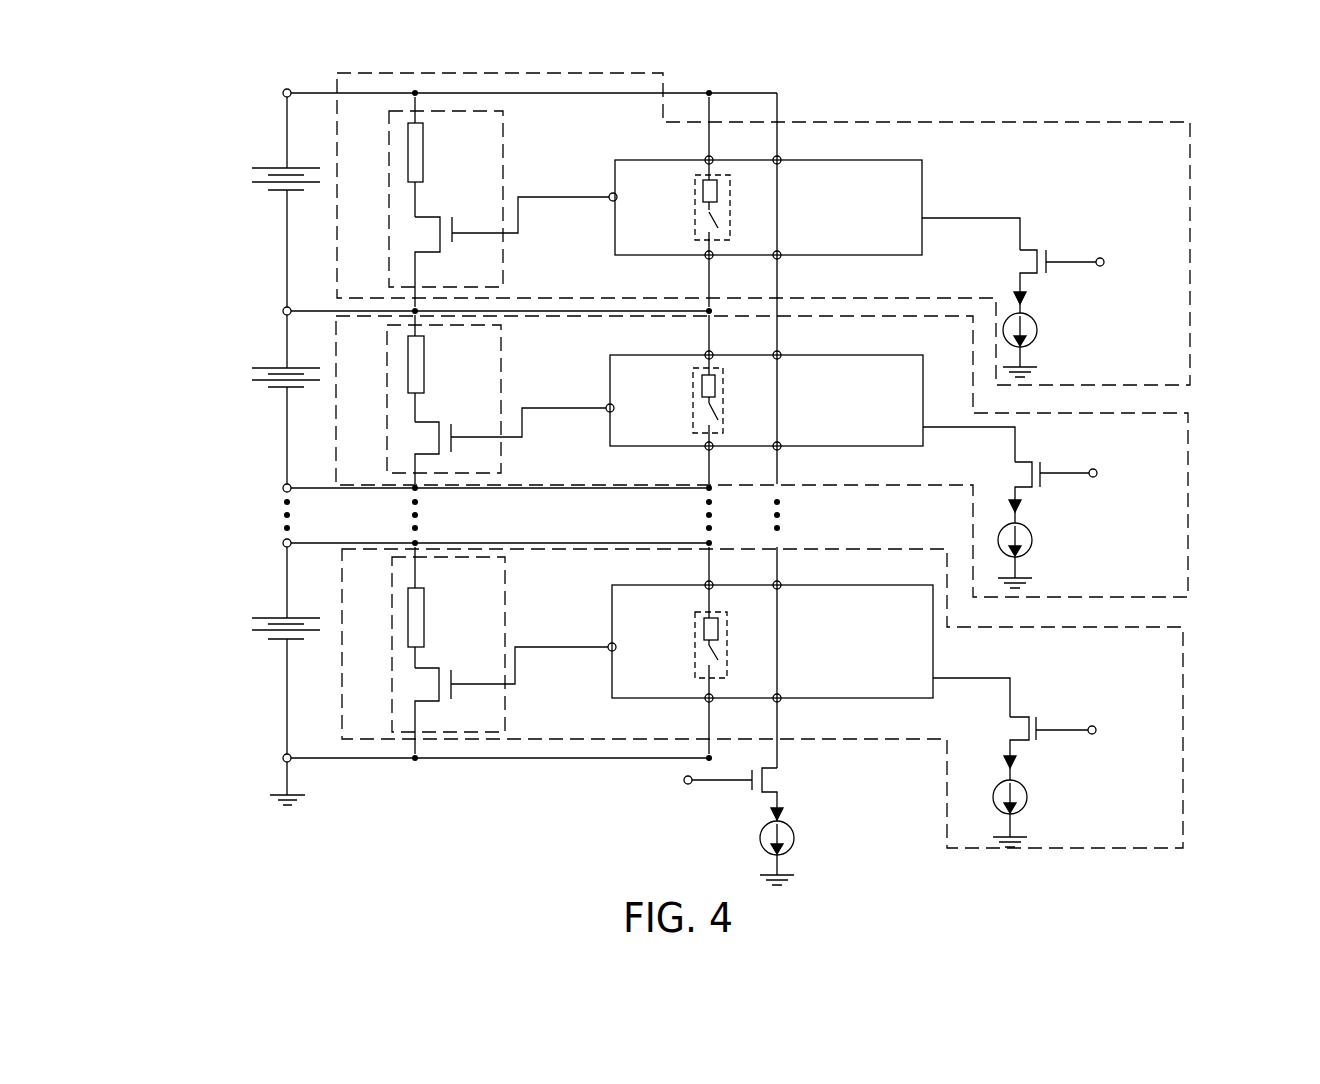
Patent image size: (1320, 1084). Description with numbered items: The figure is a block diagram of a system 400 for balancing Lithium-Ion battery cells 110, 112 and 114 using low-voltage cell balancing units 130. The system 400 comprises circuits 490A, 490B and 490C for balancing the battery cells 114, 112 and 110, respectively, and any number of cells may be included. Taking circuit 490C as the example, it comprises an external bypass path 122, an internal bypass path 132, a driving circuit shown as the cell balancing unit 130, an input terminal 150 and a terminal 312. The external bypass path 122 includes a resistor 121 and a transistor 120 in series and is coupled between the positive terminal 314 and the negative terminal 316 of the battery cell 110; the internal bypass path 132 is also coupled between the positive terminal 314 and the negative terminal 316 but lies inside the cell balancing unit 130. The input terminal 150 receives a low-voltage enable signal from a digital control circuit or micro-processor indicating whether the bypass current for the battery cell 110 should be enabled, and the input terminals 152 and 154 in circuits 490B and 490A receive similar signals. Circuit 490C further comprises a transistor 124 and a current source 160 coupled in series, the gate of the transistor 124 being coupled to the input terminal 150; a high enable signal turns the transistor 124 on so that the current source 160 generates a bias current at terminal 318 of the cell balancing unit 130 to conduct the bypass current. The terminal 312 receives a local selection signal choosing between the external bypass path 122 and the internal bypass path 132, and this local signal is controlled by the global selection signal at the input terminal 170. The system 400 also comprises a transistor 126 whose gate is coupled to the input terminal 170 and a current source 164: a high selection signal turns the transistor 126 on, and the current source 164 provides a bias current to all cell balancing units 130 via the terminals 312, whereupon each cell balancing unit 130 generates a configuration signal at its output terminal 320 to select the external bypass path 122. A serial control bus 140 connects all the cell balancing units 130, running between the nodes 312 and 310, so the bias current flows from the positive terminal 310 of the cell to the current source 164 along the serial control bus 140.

The system 400 is at (95, 73).
The battery cell 110 is at (283, 617).
The battery cell 112 is at (283, 367).
The battery cell 114 is at (283, 192).
The transistor 120 is at (457, 240).
The resistor 121 is at (425, 173).
The external bypass path 122 is at (389, 187).
The transistor 124 is at (1021, 248).
The transistor 126 is at (785, 770).
The cell balancing unit 130 is at (771, 429).
The internal bypass path 132 is at (695, 192).
The serial control bus 140 is at (777, 112).
The input terminal 150 is at (1093, 726).
The input terminal 152 is at (1094, 469).
The input terminal 154 is at (1101, 258).
The current source 160 is at (1037, 322).
The current source 164 is at (795, 832).
The input terminal 170 is at (683, 780).
The positive terminal 310 is at (779, 157).
The terminal 312 is at (779, 259).
The positive terminal 314 is at (707, 157).
The negative terminal 316 is at (708, 259).
The terminal 318 is at (925, 216).
The output terminal 320 is at (612, 193).
The circuit 490A is at (1189, 172).
The circuit 490B is at (1188, 470).
The circuit 490C is at (1183, 740).